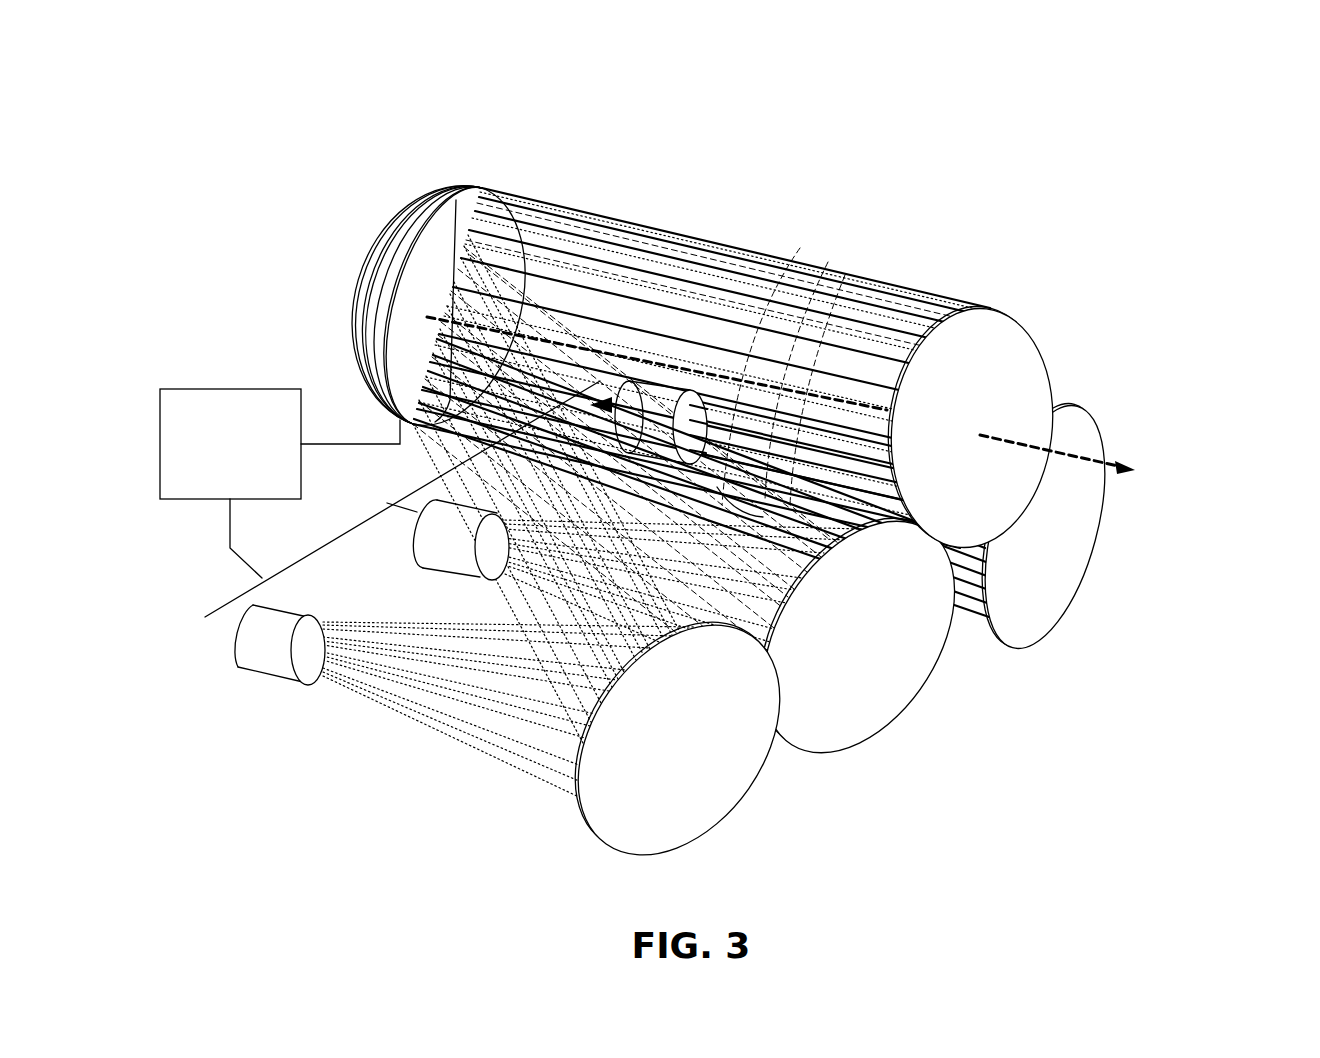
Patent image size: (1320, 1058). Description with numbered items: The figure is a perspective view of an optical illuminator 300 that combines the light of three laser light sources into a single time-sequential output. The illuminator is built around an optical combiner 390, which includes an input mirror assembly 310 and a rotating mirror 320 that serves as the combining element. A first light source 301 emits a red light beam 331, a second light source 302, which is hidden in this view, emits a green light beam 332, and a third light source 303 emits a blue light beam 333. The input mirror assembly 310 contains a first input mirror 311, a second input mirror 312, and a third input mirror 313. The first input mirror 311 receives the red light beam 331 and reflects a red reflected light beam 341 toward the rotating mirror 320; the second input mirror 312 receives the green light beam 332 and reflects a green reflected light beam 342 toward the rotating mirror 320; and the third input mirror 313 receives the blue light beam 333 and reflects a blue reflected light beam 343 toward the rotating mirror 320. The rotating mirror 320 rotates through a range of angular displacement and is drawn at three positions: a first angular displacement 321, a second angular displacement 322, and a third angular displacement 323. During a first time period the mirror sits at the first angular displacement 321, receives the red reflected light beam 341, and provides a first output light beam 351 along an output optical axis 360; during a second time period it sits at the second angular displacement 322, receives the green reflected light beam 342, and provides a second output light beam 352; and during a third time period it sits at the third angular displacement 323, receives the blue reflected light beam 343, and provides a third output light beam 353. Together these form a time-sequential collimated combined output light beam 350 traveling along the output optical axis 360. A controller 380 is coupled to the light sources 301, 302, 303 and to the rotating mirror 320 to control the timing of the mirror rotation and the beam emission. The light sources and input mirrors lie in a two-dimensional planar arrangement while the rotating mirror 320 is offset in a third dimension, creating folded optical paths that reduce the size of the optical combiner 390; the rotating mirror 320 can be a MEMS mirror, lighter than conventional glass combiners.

The optical illuminator 300 is at (1211, 84).
The first light source 301 is at (270, 680).
The second light source 302 is at (637, 397).
The third light source 303 is at (410, 549).
The input mirror assembly 310 is at (844, 642).
The first input mirror 311 is at (678, 738).
The second input mirror 312 is at (1070, 563).
The third input mirror 313 is at (877, 705).
The rotating mirror 320 is at (639, 356).
The first angular displacement 321 is at (387, 247).
The second angular displacement 322 is at (385, 300).
The third angular displacement 323 is at (395, 345).
The red light beam 331 is at (429, 750).
The green light beam 332 is at (973, 617).
The blue light beam 333 is at (512, 591).
The red reflected light beam 341 is at (546, 686).
The green reflected light beam 342 is at (954, 614).
The blue reflected light beam 343 is at (483, 426).
The time-sequential collimated combined output light beam 350 is at (843, 352).
The first output light beam 351 is at (794, 373).
The second output light beam 352 is at (844, 365).
The third output light beam 353 is at (826, 228).
The output optical axis 360 is at (1018, 440).
The controller 380 is at (210, 388).
The optical combiner 390 is at (265, 155).